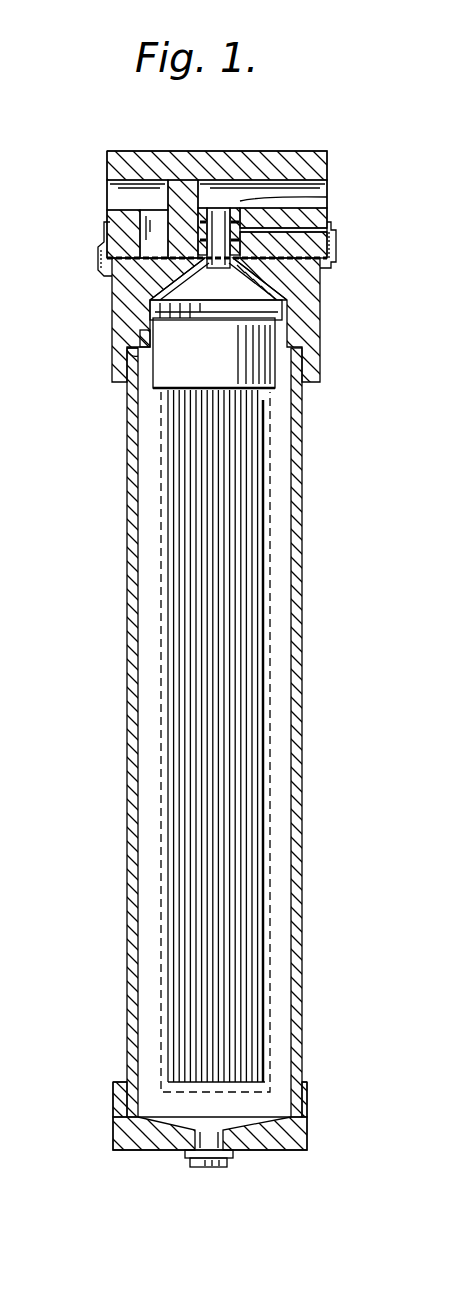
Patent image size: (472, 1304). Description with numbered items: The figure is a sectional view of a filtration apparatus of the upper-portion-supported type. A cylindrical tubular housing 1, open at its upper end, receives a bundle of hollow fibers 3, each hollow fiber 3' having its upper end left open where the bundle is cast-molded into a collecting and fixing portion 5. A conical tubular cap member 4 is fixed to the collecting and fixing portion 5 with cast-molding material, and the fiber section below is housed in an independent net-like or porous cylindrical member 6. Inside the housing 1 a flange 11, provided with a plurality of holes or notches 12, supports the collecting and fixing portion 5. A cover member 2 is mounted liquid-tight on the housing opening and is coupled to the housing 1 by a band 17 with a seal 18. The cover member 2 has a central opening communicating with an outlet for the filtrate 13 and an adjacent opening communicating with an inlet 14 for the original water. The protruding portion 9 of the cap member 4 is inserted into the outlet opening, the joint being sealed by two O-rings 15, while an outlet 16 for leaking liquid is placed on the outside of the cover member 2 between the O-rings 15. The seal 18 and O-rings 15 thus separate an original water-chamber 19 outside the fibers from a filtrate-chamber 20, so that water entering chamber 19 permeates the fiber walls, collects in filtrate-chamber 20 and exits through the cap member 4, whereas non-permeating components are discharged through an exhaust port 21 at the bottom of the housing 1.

The tubular housing 1 is at (300, 640).
The cover member 2 is at (283, 151).
The bundle of hollow fibers 3 is at (268, 736).
The hollow fiber 3' is at (319, 741).
The tubular cap member 4 is at (285, 300).
The collecting and fixing portion 5 is at (300, 366).
The independent member 6 is at (270, 700).
The protruding portion 9 is at (318, 194).
The flange 11 is at (143, 358).
The holes or notches 12 is at (148, 337).
The outlet for the filtrate 13 is at (318, 184).
The inlet for the original water 14 is at (107, 192).
The O-rings 15 is at (107, 214).
The outlet for leaking liquid 16 is at (300, 228).
The band 17 is at (338, 266).
The seal 18 is at (98, 248).
The original water-chamber 19 is at (152, 453).
The filtrate-chamber 20 is at (175, 280).
The exhaust port 21 is at (215, 1165).